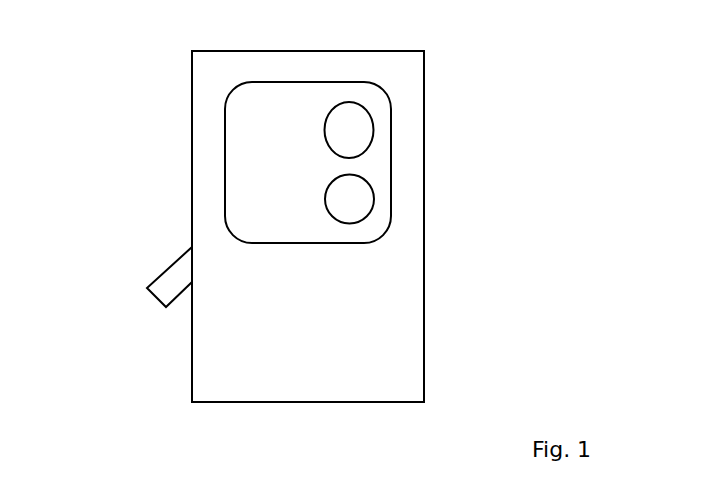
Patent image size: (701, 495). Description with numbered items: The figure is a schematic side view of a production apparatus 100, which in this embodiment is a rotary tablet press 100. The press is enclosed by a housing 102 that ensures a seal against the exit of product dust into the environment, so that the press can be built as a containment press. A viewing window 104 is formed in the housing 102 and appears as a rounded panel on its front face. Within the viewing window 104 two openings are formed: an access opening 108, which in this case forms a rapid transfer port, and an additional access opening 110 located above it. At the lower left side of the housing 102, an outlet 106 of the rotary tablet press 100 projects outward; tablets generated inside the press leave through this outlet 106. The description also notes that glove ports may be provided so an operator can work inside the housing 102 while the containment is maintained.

The production apparatus 100 is at (550, 97).
The housing 102 is at (405, 299).
The viewing window 104 is at (250, 161).
The outlet 106 is at (173, 275).
The access opening 108 is at (360, 202).
The additional access opening 110 is at (354, 133).